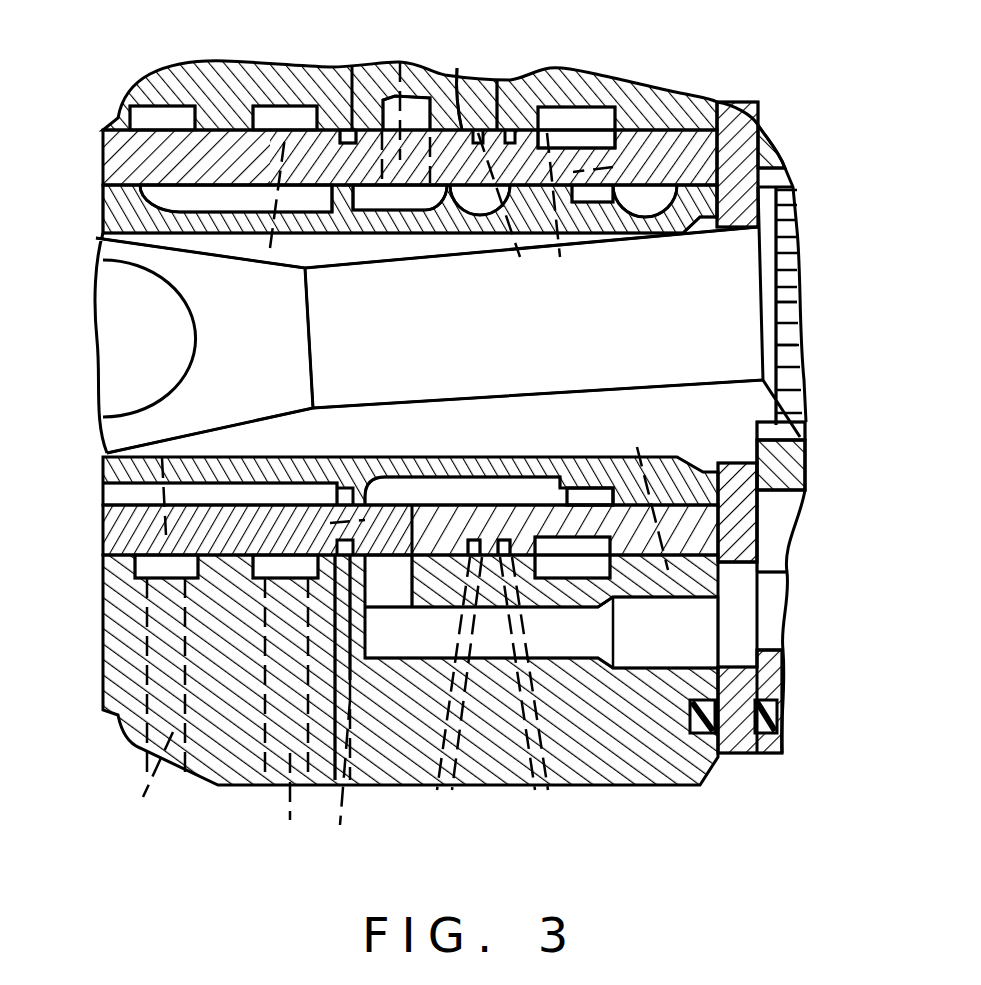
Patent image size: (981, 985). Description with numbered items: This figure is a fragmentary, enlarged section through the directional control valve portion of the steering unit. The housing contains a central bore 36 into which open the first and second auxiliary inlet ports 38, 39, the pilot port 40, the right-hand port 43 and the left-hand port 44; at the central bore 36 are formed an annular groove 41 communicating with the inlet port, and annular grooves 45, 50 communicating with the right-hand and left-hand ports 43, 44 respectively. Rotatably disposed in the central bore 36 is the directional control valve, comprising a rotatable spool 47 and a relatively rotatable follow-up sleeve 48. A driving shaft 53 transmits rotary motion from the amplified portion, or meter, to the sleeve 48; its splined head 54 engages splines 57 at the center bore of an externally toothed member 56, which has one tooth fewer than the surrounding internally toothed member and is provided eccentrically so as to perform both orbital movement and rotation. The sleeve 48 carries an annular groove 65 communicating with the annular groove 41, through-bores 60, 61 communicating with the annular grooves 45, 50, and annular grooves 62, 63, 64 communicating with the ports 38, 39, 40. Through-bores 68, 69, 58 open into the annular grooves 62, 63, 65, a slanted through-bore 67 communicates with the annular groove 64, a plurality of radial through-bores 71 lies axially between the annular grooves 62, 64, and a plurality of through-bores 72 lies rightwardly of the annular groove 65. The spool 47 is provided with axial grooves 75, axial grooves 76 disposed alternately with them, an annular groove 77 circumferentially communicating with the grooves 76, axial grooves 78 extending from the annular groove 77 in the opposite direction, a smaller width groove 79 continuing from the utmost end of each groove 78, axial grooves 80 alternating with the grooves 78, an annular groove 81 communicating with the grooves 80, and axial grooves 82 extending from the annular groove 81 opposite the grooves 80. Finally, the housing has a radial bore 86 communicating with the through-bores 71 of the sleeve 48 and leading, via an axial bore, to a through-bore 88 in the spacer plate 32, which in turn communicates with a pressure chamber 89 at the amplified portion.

The spacer plate 32 is at (732, 733).
The central bore 36 is at (233, 136).
The first auxiliary inlet port 38 is at (440, 790).
The second auxiliary inlet port 39 is at (548, 790).
The pilot port 40 is at (345, 701).
The annular groove 41 is at (592, 115).
The right-hand port 43 is at (282, 701).
The left-hand port 44 is at (152, 686).
The annular groove 45 is at (285, 115).
The rotatable spool 47 is at (113, 217).
The follow-up sleeve 48 is at (683, 125).
The annular groove 50 is at (172, 117).
The driving shaft 53 is at (429, 340).
The splined head 54 is at (782, 290).
The externally toothed member 56 is at (777, 473).
The splines 57 is at (773, 427).
The through-bore 58 is at (548, 498).
The through-bore 60 is at (295, 248).
The through-bore 61 is at (160, 458).
The annular groove 62 is at (462, 115).
The annular groove 63 is at (497, 120).
The annular groove 64 is at (348, 133).
The annular groove 65 is at (557, 137).
The slanted through-bore 67 is at (310, 525).
The through-bore 68 is at (525, 268).
The through-bore 69 is at (565, 268).
The radial through-bores 71 is at (400, 62).
The through-bores 72 is at (703, 531).
The axial grooves 75 is at (253, 498).
The axial grooves 76 is at (220, 193).
The annular groove 77 is at (338, 205).
The axial groove 78 is at (403, 193).
The smaller width groove 79 is at (470, 193).
The axial grooves 80 is at (483, 490).
The annular groove 81 is at (588, 193).
The axial grooves 82 is at (602, 460).
The radial bore 86 is at (383, 577).
The through-bore 88 is at (735, 630).
The pressure chamber 89 is at (772, 560).